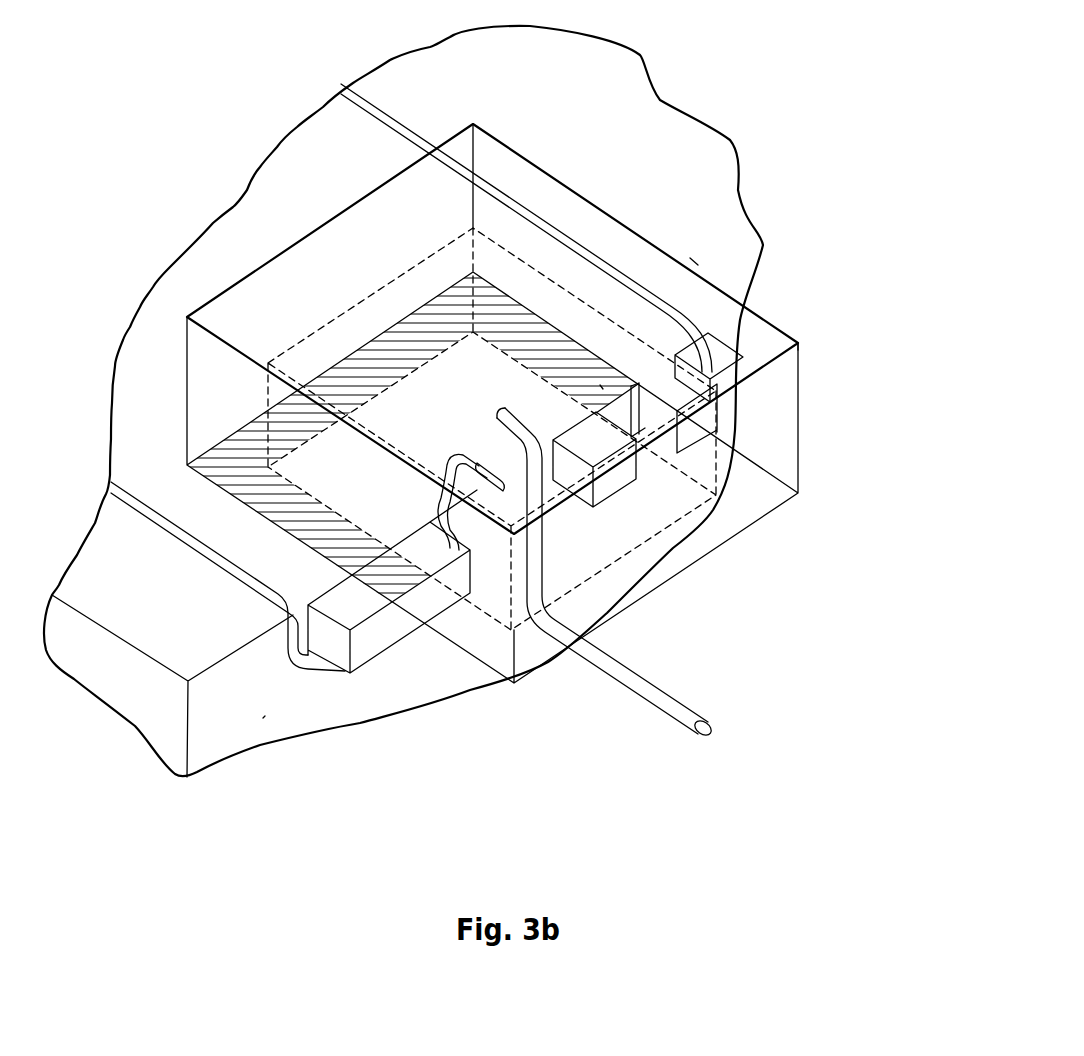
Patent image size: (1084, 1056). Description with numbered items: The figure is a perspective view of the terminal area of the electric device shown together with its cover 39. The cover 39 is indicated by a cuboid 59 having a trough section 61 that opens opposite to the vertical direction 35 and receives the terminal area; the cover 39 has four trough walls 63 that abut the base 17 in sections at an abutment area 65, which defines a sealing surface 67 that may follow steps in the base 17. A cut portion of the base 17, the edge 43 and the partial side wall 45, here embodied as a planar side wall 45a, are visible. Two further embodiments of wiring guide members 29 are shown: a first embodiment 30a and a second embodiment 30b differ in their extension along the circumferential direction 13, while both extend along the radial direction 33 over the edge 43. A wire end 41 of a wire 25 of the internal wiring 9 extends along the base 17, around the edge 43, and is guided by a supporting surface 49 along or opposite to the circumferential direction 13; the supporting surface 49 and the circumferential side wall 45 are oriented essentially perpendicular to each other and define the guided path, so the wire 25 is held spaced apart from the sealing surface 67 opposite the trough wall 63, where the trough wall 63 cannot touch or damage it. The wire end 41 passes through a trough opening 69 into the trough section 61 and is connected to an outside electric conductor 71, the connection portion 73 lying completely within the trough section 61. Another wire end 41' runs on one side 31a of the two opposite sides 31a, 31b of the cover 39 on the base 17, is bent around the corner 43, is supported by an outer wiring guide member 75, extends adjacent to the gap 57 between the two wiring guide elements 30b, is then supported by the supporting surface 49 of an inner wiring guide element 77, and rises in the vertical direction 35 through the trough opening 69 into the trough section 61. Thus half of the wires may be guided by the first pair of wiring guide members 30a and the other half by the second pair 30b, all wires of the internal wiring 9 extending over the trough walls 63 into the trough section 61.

The internal wiring 9 is at (214, 576).
The circumferential direction 13 is at (632, 652).
The base 17 is at (403, 401).
The wire 25 is at (153, 510).
The wiring guide member 29 is at (570, 469).
The first embodiment of the wiring guide member 30a is at (570, 469).
The second embodiment of the wiring guide member 30b is at (570, 469).
The first side of the cover 31a is at (690, 258).
The second side of the cover 31b is at (440, 672).
The radial direction 33 is at (629, 613).
The vertical direction 35 is at (629, 613).
The cover 39 is at (873, 326).
The wire end 41 is at (592, 445).
The another wire end 41' is at (526, 228).
The edge 43 is at (725, 342).
The partial side wall 45 is at (300, 782).
The planar side wall 45a is at (263, 718).
The supporting surface 49 is at (618, 592).
The gap 57 is at (620, 410).
The cuboid 59 is at (800, 342).
The trough section 61 is at (717, 473).
The trough walls 63 is at (203, 373).
The abutment area 65 is at (744, 318).
The sealing surface 67 is at (600, 386).
The trough opening 69 is at (629, 613).
The outside electric conductor 71 is at (629, 613).
The connection portion 73 is at (492, 462).
The outer wiring guide member 75 is at (570, 469).
The inner wiring guide element 77 is at (570, 469).